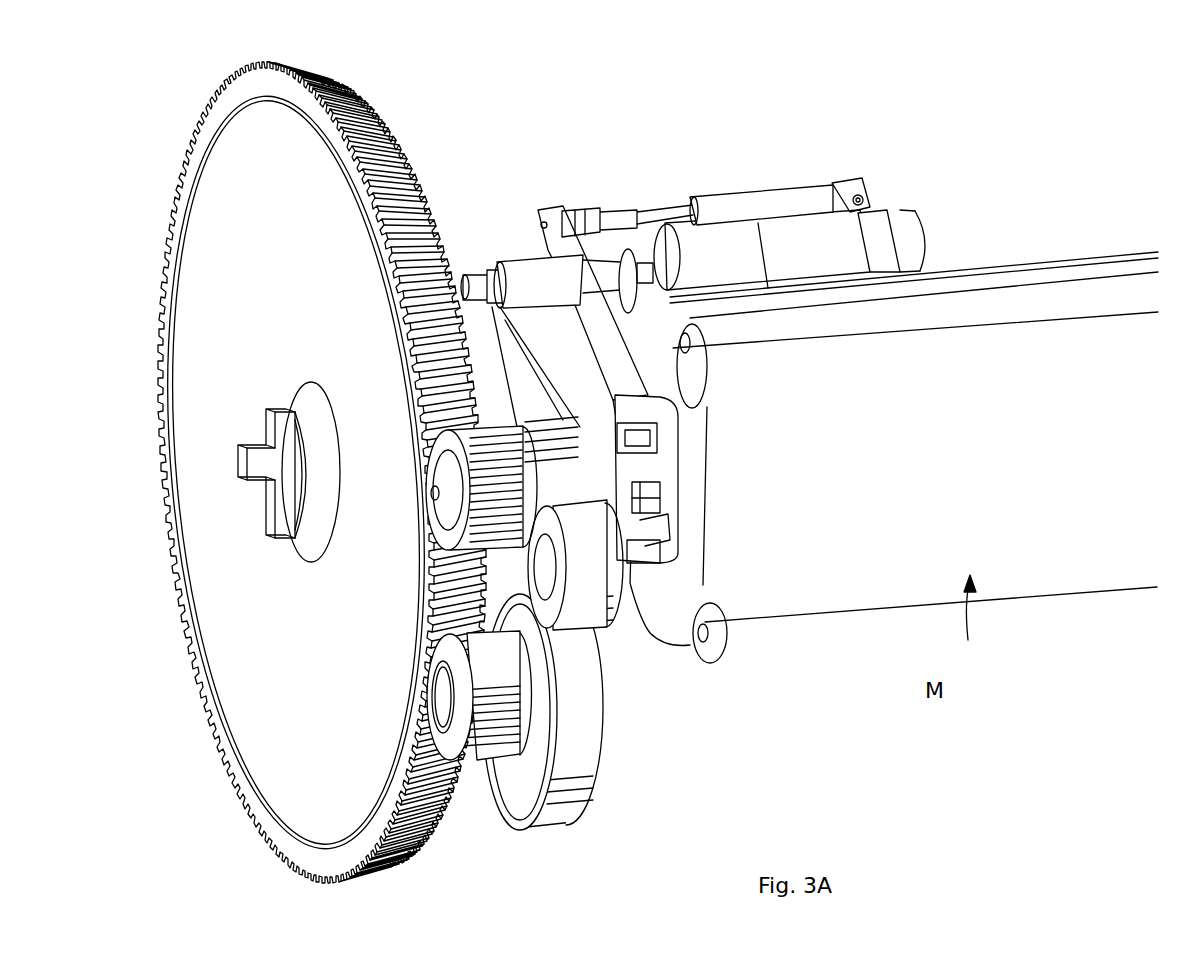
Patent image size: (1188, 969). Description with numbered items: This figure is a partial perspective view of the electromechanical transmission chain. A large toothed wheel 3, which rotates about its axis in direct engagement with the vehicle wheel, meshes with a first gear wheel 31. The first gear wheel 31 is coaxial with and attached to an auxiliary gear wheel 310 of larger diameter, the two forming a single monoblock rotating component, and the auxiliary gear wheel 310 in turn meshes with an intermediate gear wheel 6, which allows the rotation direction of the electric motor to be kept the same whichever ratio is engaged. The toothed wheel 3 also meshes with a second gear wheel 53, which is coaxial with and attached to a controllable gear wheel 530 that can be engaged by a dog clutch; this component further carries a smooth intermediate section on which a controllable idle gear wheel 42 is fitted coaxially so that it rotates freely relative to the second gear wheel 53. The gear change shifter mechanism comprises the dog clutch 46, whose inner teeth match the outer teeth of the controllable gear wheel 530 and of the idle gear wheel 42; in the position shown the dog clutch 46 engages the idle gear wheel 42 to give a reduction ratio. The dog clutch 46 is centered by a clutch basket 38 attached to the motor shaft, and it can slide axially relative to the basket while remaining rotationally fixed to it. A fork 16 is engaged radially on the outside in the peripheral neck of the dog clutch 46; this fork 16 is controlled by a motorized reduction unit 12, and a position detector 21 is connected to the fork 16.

The toothed wheel 3 is at (378, 240).
The intermediate gear wheel 6 is at (607, 633).
The motorized reduction unit 12 is at (912, 253).
The fork 16 is at (577, 342).
The position detector 21 is at (785, 205).
The first gear wheel 31 is at (443, 650).
The clutch basket 38 is at (660, 463).
The idle gear wheel 42 is at (660, 513).
The dog clutch 46 is at (643, 553).
The second gear wheel 53 is at (443, 437).
The auxiliary gear wheel 310 is at (573, 743).
The controllable gear wheel 530 is at (655, 490).